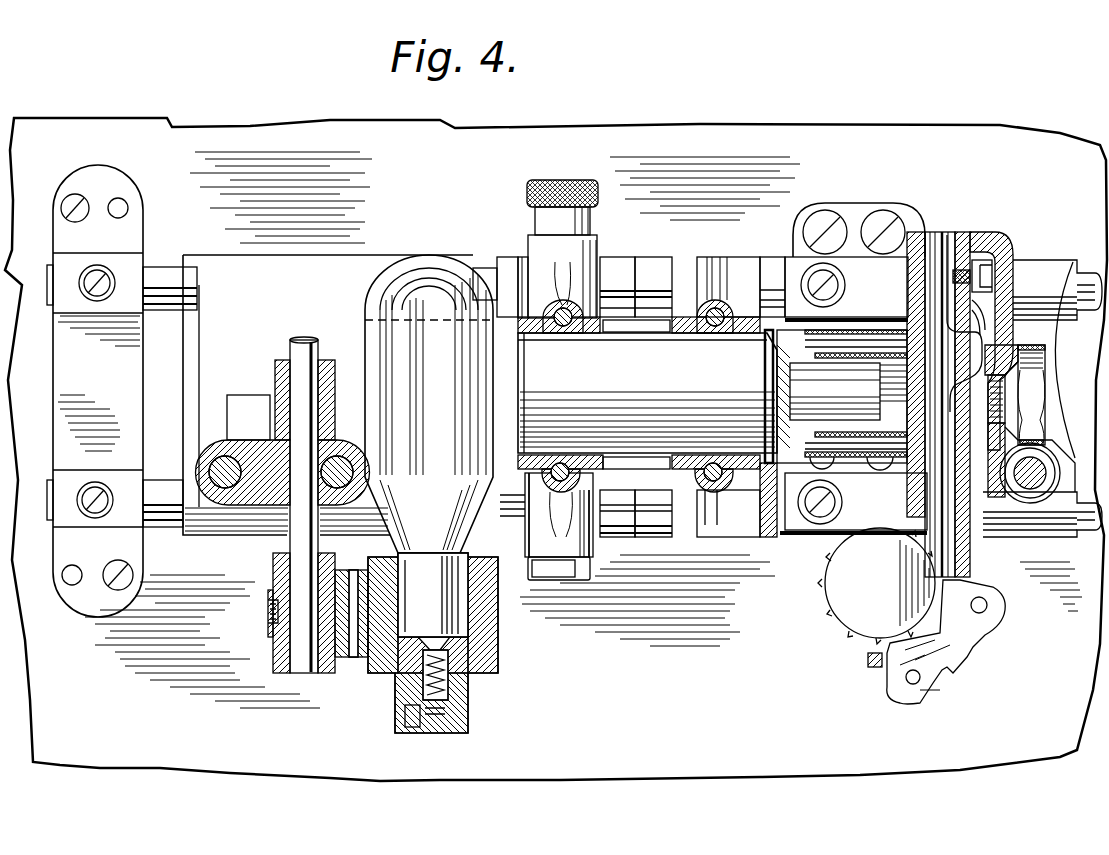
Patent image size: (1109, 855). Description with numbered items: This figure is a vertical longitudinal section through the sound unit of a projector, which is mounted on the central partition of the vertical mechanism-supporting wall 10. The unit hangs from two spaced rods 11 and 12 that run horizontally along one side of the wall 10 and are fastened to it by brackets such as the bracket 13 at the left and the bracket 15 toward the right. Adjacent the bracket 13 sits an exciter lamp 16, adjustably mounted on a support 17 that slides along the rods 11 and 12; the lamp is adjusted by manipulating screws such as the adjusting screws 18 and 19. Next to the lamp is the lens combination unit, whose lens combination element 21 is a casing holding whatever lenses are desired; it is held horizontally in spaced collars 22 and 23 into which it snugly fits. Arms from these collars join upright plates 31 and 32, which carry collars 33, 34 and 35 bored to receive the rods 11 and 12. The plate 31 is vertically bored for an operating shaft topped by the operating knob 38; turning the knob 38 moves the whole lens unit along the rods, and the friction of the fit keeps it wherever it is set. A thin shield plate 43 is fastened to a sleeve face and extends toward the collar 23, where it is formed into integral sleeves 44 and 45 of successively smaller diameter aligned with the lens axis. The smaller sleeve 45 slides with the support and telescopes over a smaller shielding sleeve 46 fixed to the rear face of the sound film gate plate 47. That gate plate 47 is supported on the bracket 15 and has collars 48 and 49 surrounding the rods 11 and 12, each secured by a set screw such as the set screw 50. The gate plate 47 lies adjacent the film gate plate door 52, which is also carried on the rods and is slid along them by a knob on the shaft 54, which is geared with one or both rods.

The vertical mechanism-supporting wall 10 is at (350, 352).
The rod 11 is at (162, 268).
The rod 12 is at (165, 487).
The bracket 13 is at (102, 190).
The bracket 15 is at (877, 207).
The exciter lamp 16 is at (445, 251).
The support 17 is at (291, 505).
The adjusting screw 18 is at (222, 455).
The adjusting screw 19 is at (365, 452).
The lens combination element 21 is at (647, 393).
The collar 22 is at (603, 270).
The collar 23 is at (735, 330).
The upright plate 31 is at (535, 268).
The upright plate 32 is at (713, 273).
The collar 33 is at (616, 287).
The collar 34 is at (615, 511).
The collar 35 is at (657, 397).
The operating knob 38 is at (558, 182).
The shield plate 43 is at (778, 475).
The sleeve 44 is at (762, 335).
The sleeve 45 is at (842, 394).
The shielding sleeve 46 is at (885, 359).
The sound film gate plate 47 is at (928, 240).
The collar 48 is at (846, 288).
The collar 49 is at (853, 503).
The set screw 50 is at (823, 262).
The film gate plate door 52 is at (985, 236).
The shaft 54 is at (1038, 466).